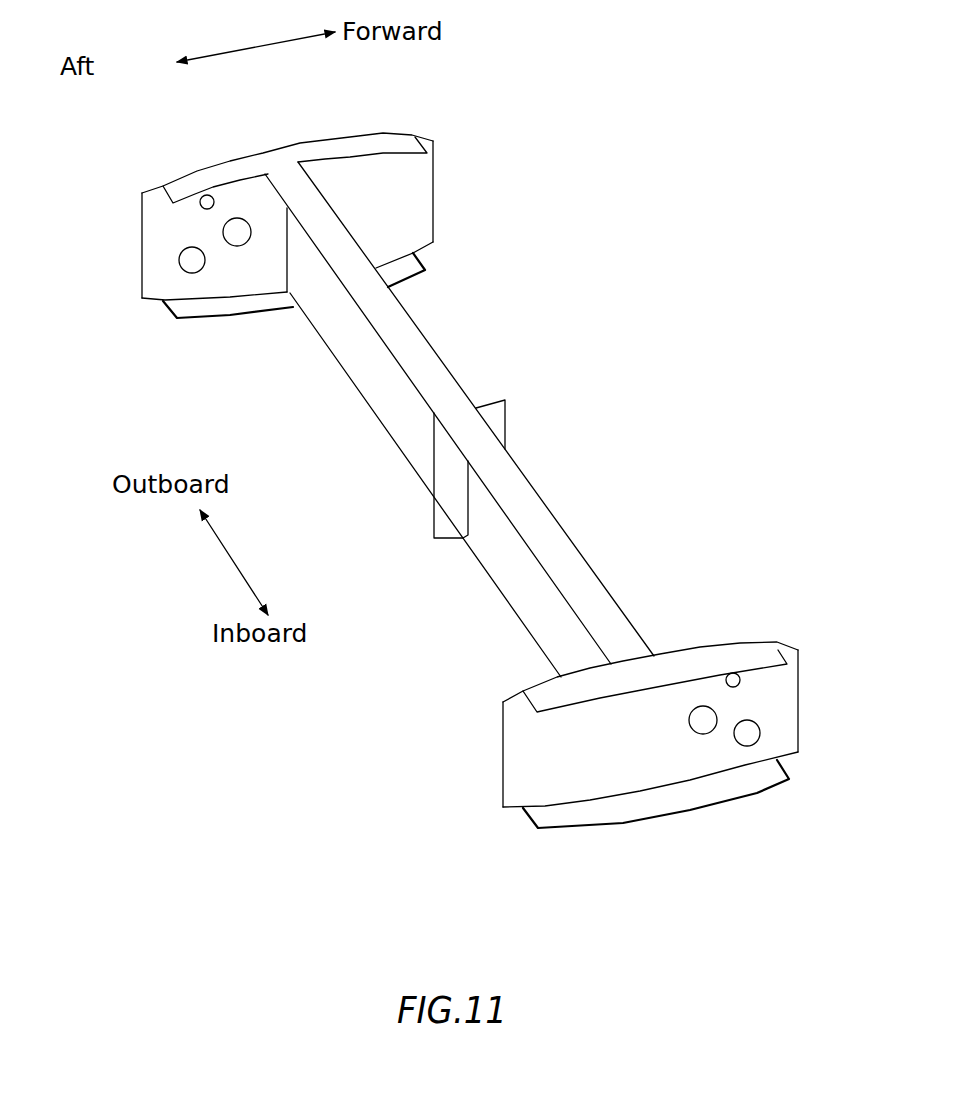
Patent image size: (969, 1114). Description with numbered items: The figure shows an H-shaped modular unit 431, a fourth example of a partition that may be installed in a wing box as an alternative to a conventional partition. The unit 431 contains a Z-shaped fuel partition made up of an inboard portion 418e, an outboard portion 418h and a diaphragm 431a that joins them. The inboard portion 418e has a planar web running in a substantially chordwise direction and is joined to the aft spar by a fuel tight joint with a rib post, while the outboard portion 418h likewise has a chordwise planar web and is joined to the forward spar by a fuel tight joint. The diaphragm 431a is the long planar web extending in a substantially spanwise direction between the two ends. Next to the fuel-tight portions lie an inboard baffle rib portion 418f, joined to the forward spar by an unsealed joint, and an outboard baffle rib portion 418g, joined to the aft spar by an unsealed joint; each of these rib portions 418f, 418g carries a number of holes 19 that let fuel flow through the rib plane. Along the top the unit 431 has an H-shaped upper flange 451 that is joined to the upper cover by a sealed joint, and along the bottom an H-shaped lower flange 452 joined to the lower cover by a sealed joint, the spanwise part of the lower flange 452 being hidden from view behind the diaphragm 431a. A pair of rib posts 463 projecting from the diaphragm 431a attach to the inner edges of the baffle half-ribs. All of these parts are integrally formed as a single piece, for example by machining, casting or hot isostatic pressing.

The H-shaped modular unit 431 is at (693, 215).
The diaphragm 431a is at (372, 375).
The H-shaped upper flange 451 is at (325, 150).
The H-shaped lower flange 452 is at (242, 305).
The rib posts 463 is at (493, 412).
The inboard portion of the fuel partition 418e is at (565, 762).
The inboard baffle rib portion 418f is at (773, 690).
The outboard baffle rib portion 418g is at (173, 222).
The outboard portion of the fuel partition 418h is at (393, 220).
The holes 19 is at (188, 265).